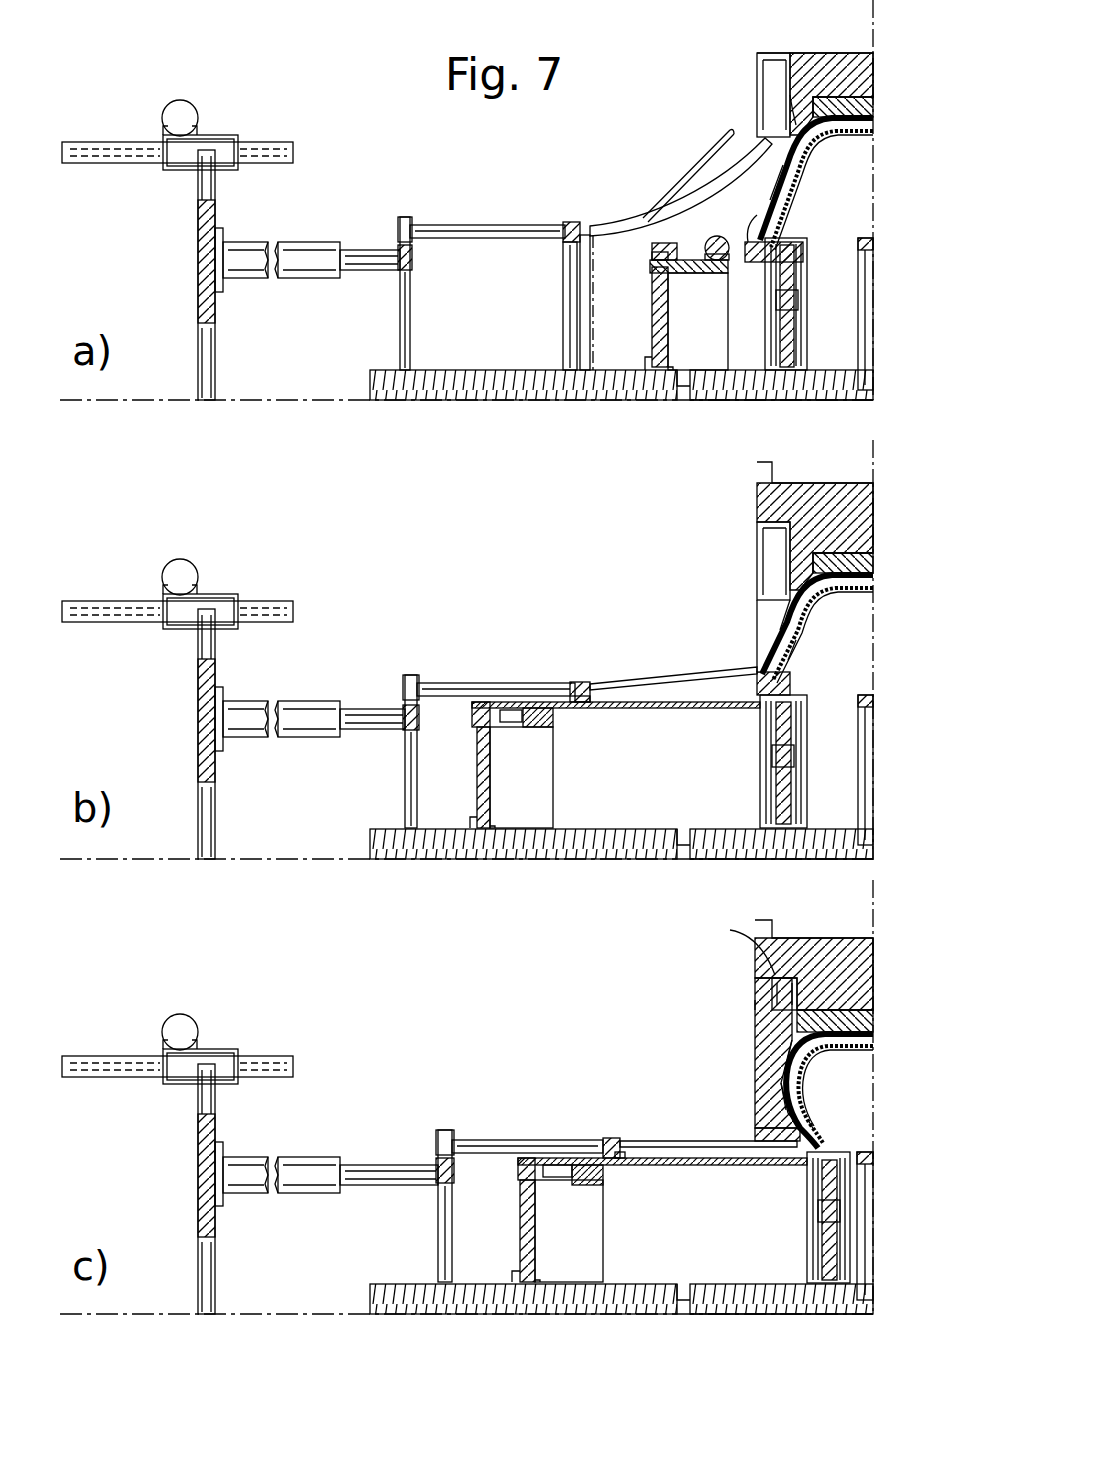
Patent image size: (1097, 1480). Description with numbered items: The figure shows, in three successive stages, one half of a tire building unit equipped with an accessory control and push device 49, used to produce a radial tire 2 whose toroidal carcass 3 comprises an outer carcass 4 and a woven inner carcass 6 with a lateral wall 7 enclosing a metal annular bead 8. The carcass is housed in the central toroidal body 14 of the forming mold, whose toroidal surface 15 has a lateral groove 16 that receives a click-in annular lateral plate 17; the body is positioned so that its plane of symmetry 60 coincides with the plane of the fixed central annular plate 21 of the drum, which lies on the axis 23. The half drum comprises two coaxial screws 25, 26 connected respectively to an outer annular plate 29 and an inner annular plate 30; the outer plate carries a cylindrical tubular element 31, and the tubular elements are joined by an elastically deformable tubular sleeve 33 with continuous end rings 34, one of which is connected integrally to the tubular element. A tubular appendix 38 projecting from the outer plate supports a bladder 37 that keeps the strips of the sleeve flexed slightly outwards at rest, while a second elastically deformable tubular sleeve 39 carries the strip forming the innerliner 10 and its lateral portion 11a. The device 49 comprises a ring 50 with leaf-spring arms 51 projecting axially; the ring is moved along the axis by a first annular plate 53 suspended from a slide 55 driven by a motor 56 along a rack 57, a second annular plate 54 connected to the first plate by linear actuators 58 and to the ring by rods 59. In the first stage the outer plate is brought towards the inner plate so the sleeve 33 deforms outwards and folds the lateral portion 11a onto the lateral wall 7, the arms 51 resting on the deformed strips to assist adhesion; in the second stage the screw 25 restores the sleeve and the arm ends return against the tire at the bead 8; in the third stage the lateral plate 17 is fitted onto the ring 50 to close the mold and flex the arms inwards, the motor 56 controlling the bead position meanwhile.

In FIG. 7c, the radial tire 2 is at (739, 940).
In FIG. 7c, the toroidal carcass 3 is at (785, 1035).
In FIG. 7a, the outer carcass 4 is at (873, 100).
In FIG. 7b, the outer carcass 4 is at (873, 560).
In FIG. 7c, the outer carcass 4 is at (868, 1032).
In FIG. 7b, the inner carcass 6 is at (786, 650).
In FIG. 7c, the inner carcass 6 is at (815, 1124).
In FIG. 7a, the lateral wall 7 is at (778, 200).
In FIG. 7b, the lateral wall 7 is at (780, 610).
In FIG. 7c, the lateral wall 7 is at (780, 1075).
In FIG. 7a, the metal annular bead 8 is at (752, 207).
In FIG. 7b, the metal annular bead 8 is at (760, 675).
In FIG. 7c, the metal annular bead 8 is at (762, 1133).
In FIG. 7a, the innerliner 10 is at (846, 135).
In FIG. 7b, the innerliner 10 is at (830, 585).
In FIG. 7c, the innerliner 10 is at (840, 1046).
In FIG. 7a, the lateral portion 11a is at (772, 178).
In FIG. 7b, the lateral portion 11a is at (778, 640).
In FIG. 7c, the lateral portion 11a is at (786, 1102).
In FIG. 7a, the central toroidal body 14 is at (825, 60).
In FIG. 7b, the central toroidal body 14 is at (822, 505).
In FIG. 7c, the central toroidal body 14 is at (826, 965).
In FIG. 7a, the toroidal surface 15 is at (790, 105).
In FIG. 7a, the lateral groove 16 is at (762, 72).
In FIG. 7b, the lateral groove 16 is at (762, 545).
In FIG. 7c, the lateral groove 16 is at (772, 995).
In FIG. 7c, the annular lateral plate 17 is at (755, 1012).
In FIG. 7a, the central annular plate 21 is at (858, 292).
In FIG. 7b, the central annular plate 21 is at (860, 762).
In FIG. 7c, the central annular plate 21 is at (862, 1232).
In FIG. 7a, the axis 23 is at (322, 398).
In FIG. 7b, the axis 23 is at (466, 830).
In FIG. 7c, the axis 23 is at (466, 1283).
In FIG. 7a, the screw 25 is at (455, 392).
In FIG. 7b, the screw 25 is at (621, 868).
In FIG. 7c, the screw 25 is at (621, 1317).
In FIG. 7a, the screw 26 is at (786, 393).
In FIG. 7b, the screw 26 is at (781, 876).
In FIG. 7c, the screw 26 is at (781, 1279).
In FIG. 7a, the outer annular plate 29 is at (650, 310).
In FIG. 7b, the outer annular plate 29 is at (478, 778).
In FIG. 7c, the outer annular plate 29 is at (520, 1232).
In FIG. 7a, the inner annular plate 30 is at (800, 340).
In FIG. 7b, the inner annular plate 30 is at (772, 782).
In FIG. 7c, the inner annular plate 30 is at (818, 1238).
In FIG. 7a, the cylindrical tubular element 31 is at (650, 258).
In FIG. 7b, the cylindrical tubular element 31 is at (475, 712).
In FIG. 7c, the cylindrical tubular element 31 is at (525, 1168).
In FIG. 7a, the elastically deformable tubular sleeve 33 is at (718, 160).
In FIG. 7b, the elastically deformable tubular sleeve 33 is at (656, 710).
In FIG. 7c, the elastically deformable tubular sleeve 33 is at (710, 1166).
In FIG. 7a, the continuous end ring 34 is at (655, 244).
In FIG. 7b, the continuous end ring 34 is at (482, 700).
In FIG. 7c, the continuous end ring 34 is at (532, 1158).
In FIG. 7a, the bladder 37 is at (712, 238).
In FIG. 7b, the bladder 37 is at (556, 712).
In FIG. 7c, the bladder 37 is at (605, 1172).
In FIG. 7a, the tubular appendix 38 is at (712, 272).
In FIG. 7b, the tubular appendix 38 is at (535, 727).
In FIG. 7c, the tubular appendix 38 is at (586, 1182).
In FIG. 7a, the elastically deformable tubular sleeve 39 is at (800, 162).
In FIG. 7b, the elastically deformable tubular sleeve 39 is at (800, 618).
In FIG. 7c, the elastically deformable tubular sleeve 39 is at (808, 1060).
In FIG. 7a, the accessory control and push device 49 is at (349, 181).
In FIG. 7b, the accessory control and push device 49 is at (337, 665).
In FIG. 7c, the accessory control and push device 49 is at (342, 1149).
In FIG. 7a, the ring 50 is at (568, 258).
In FIG. 7b, the ring 50 is at (580, 681).
In FIG. 7c, the ring 50 is at (613, 1138).
In FIG. 7a, the leaf-spring arm 51 is at (640, 212).
In FIG. 7b, the leaf-spring arm 51 is at (638, 676).
In FIG. 7c, the leaf-spring arm 51 is at (683, 1140).
In FIG. 7a, the first annular plate 53 is at (205, 355).
In FIG. 7b, the first annular plate 53 is at (233, 734).
In FIG. 7c, the first annular plate 53 is at (183, 1189).
In FIG. 7a, the second annular plate 54 is at (403, 290).
In FIG. 7b, the second annular plate 54 is at (407, 745).
In FIG. 7c, the second annular plate 54 is at (440, 1215).
In FIG. 7a, the slide 55 is at (238, 130).
In FIG. 7b, the slide 55 is at (208, 567).
In FIG. 7c, the slide 55 is at (213, 1027).
In FIG. 7a, the motor 56 is at (185, 118).
In FIG. 7b, the motor 56 is at (180, 549).
In FIG. 7c, the motor 56 is at (180, 1005).
In FIG. 7a, the rack 57 is at (142, 148).
In FIG. 7b, the rack 57 is at (177, 574).
In FIG. 7c, the rack 57 is at (177, 1029).
In FIG. 7a, the linear actuator 58 is at (318, 262).
In FIG. 7b, the linear actuator 58 is at (300, 718).
In FIG. 7c, the linear actuator 58 is at (312, 1175).
In FIG. 7a, the rod 59 is at (468, 224).
In FIG. 7b, the rod 59 is at (442, 682).
In FIG. 7c, the rod 59 is at (491, 1140).
In FIG. 7a, the plane of symmetry 60 is at (872, 48).
In FIG. 7b, the plane of symmetry 60 is at (872, 478).
In FIG. 7c, the plane of symmetry 60 is at (872, 930).